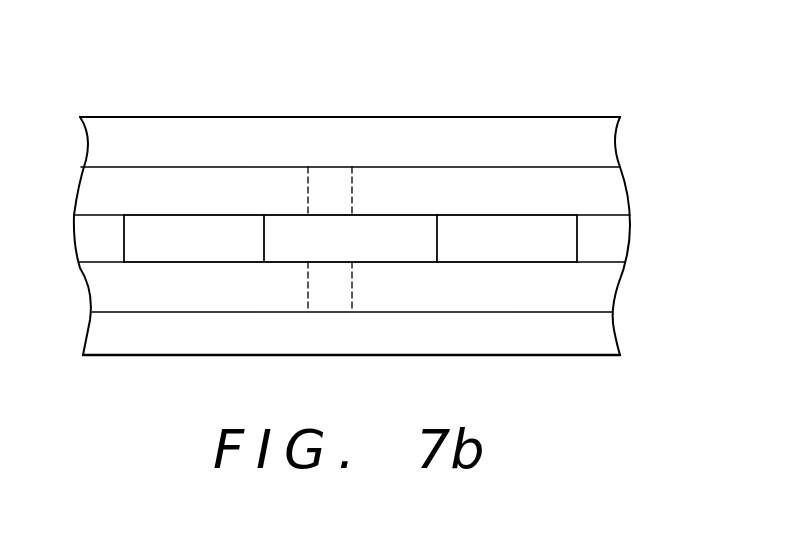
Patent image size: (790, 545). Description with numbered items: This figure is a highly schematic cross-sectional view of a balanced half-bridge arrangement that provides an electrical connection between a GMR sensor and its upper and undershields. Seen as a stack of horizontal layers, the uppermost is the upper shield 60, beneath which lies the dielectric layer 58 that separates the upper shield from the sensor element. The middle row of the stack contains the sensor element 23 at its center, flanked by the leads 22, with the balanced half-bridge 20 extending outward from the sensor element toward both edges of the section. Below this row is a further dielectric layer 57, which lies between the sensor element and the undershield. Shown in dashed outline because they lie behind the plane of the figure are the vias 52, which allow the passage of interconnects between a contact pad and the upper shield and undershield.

The balanced half-bridge 20 is at (607, 243).
The leads 22 is at (194, 233).
The sensor element 23 is at (398, 233).
The vias 52 is at (330, 188).
The dielectric layer 57 is at (595, 287).
The dielectric layer 58 is at (598, 180).
The upper shield 60 is at (595, 135).